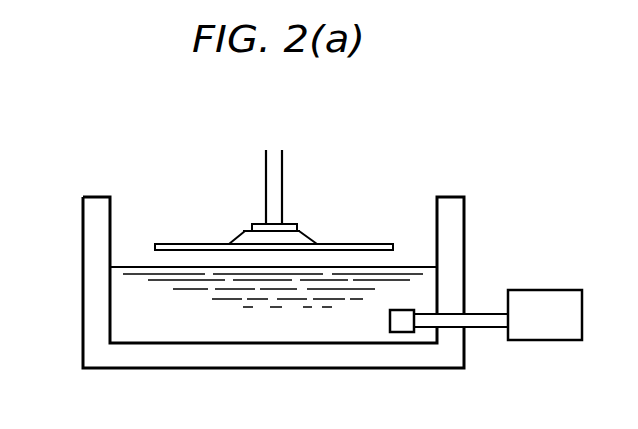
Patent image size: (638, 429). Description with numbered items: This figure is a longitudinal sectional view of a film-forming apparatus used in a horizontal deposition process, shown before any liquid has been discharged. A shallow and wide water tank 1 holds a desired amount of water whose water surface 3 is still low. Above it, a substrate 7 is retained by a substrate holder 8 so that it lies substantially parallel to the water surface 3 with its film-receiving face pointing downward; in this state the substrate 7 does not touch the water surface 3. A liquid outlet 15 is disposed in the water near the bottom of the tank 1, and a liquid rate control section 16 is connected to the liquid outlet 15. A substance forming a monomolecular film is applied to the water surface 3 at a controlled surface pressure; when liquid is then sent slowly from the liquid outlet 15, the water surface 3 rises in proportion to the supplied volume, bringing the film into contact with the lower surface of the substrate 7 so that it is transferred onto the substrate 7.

The water tank 1 is at (88, 282).
The water surface 3 is at (404, 266).
The substrate 7 is at (183, 243).
The substrate holder 8 is at (266, 169).
The liquid outlet 15 is at (401, 333).
The liquid rate control section 16 is at (536, 290).